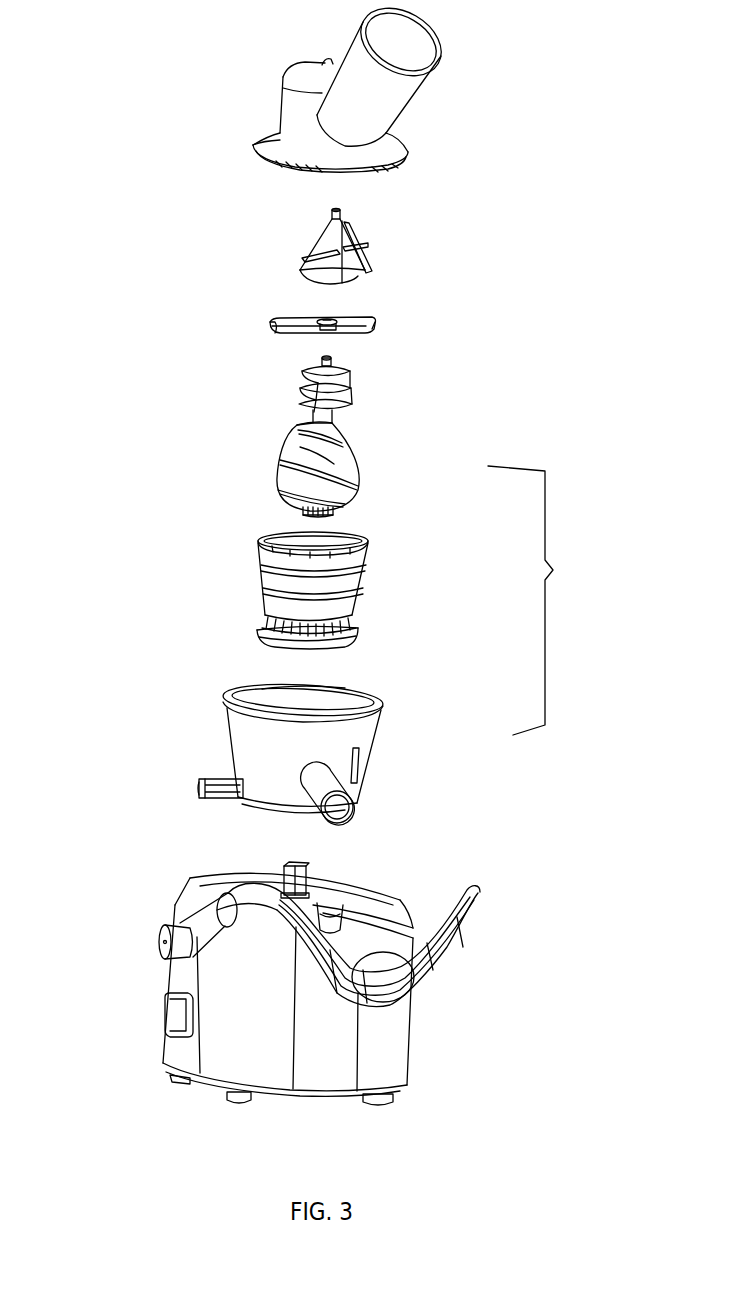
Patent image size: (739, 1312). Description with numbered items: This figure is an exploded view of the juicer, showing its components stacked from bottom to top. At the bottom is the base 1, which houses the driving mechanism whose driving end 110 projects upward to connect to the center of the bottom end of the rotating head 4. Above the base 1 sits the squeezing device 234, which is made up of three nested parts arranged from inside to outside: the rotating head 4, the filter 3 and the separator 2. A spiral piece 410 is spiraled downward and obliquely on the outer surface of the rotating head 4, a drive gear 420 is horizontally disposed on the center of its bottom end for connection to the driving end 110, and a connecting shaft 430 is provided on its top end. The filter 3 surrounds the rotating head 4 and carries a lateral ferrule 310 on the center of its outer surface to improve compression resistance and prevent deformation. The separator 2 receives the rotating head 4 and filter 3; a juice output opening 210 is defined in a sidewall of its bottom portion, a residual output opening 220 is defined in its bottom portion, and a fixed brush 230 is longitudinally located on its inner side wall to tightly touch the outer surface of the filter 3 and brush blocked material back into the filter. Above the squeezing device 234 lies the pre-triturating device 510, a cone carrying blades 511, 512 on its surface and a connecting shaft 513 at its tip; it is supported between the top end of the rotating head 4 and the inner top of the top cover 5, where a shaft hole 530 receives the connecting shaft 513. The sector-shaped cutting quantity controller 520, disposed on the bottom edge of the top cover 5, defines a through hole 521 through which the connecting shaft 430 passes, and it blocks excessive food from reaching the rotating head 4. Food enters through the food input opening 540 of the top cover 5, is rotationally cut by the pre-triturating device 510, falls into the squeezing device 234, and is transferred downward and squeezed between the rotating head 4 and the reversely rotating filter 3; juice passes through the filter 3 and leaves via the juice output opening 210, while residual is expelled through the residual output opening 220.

The base 1 is at (290, 977).
The driving end 110 is at (287, 873).
The separator 2 is at (281, 766).
The juice output opening 210 is at (338, 808).
The residual output opening 220 is at (200, 783).
The fixed brush 230 is at (358, 770).
The squeezing device 234 is at (537, 600).
The filter 3 is at (312, 590).
The ferrule 310 is at (272, 598).
The rotating head 4 is at (325, 453).
The spiral piece 410 is at (303, 397).
The drive gear 420 is at (292, 509).
The connecting shaft 430 is at (332, 365).
The top cover 5 is at (363, 86).
The pre-triturating device 510 is at (354, 225).
The blade 511 is at (340, 252).
The blade 512 is at (369, 257).
The connecting shaft 513 is at (340, 216).
The cutting quantity controller 520 is at (259, 329).
The through hole 521 is at (325, 326).
The shaft hole 530 is at (322, 61).
The food input opening 540 is at (412, 53).